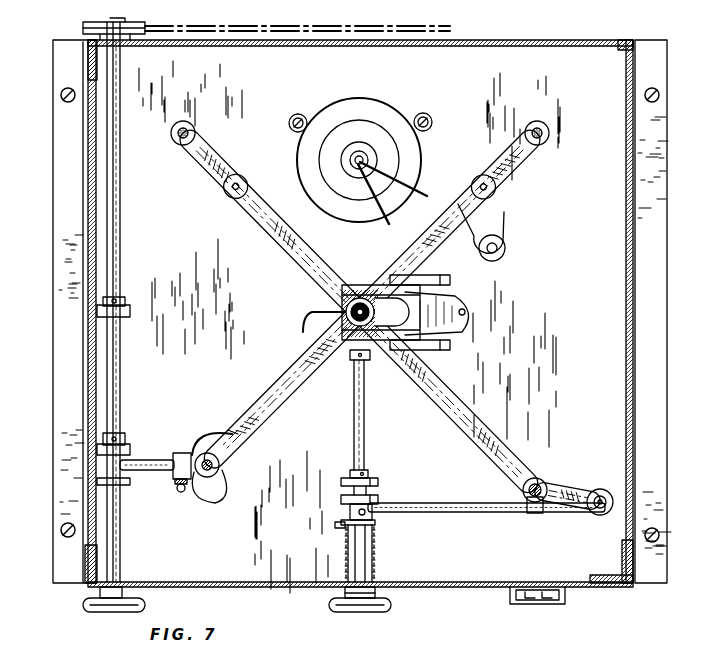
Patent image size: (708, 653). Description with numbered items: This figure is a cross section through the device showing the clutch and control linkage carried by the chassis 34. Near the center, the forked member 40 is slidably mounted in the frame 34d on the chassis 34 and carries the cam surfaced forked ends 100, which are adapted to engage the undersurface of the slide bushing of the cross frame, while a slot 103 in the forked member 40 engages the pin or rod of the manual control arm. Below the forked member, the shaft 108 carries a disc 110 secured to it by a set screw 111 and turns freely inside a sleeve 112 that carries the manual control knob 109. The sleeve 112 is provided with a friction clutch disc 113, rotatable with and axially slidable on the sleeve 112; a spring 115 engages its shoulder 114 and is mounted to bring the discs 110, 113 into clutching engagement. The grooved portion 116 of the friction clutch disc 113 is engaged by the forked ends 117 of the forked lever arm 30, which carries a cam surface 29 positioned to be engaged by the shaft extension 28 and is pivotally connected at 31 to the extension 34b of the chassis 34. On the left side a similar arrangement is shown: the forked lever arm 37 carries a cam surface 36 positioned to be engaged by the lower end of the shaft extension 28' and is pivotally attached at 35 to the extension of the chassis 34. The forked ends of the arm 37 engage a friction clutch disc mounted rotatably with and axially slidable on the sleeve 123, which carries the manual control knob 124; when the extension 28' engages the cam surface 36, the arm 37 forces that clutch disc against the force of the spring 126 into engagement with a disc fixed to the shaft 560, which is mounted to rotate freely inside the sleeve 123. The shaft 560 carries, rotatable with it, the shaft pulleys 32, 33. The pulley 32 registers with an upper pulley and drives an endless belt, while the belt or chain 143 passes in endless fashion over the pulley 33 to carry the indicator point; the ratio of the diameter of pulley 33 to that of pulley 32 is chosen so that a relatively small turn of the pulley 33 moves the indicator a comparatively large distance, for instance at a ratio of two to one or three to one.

The shaft pulley 33 is at (83, 30).
The belt or chain 143 is at (205, 27).
The shaft 560 is at (122, 226).
The shaft pulley 32 is at (132, 308).
The chassis 34 is at (311, 272).
The cam surfaced forked ends 100 is at (379, 292).
The forked member 40 is at (416, 297).
The slot 103 is at (459, 321).
The frame 34d is at (406, 340).
The spring 126 is at (194, 442).
The forked lever arm 37 is at (163, 460).
The shaft 108 is at (354, 428).
The set screw 111 is at (352, 474).
The disc 110 is at (380, 482).
The forked ends 117 is at (350, 512).
The friction clutch disc 113 is at (378, 500).
The cam surface 36 is at (177, 489).
The extension 28' is at (199, 490).
The shoulder 114 is at (376, 522).
The sleeve 123 is at (124, 553).
The pivot 35 is at (220, 508).
The grooved portion 116 is at (340, 525).
The sleeve 112 is at (358, 553).
The spring 115 is at (372, 577).
The manual control knob 124 is at (103, 605).
The manual control knob 109 is at (390, 606).
The forked lever arm 30 is at (485, 511).
The cam surface 29 is at (535, 513).
The extension 28 is at (551, 475).
The extension 34b is at (560, 486).
The pivot 31 is at (607, 513).